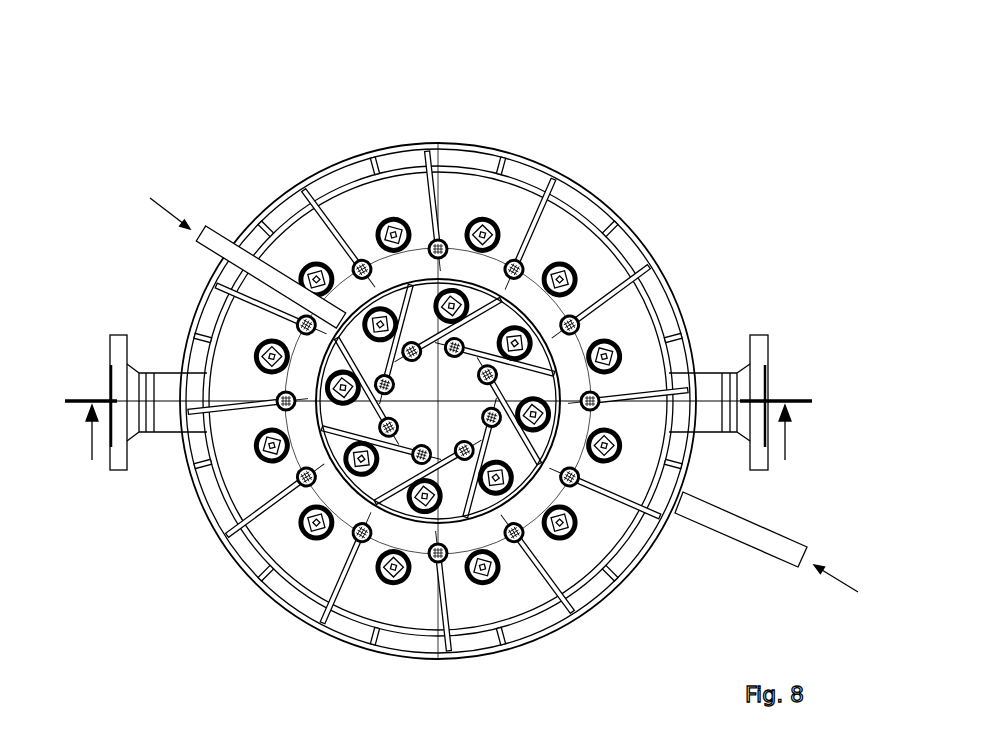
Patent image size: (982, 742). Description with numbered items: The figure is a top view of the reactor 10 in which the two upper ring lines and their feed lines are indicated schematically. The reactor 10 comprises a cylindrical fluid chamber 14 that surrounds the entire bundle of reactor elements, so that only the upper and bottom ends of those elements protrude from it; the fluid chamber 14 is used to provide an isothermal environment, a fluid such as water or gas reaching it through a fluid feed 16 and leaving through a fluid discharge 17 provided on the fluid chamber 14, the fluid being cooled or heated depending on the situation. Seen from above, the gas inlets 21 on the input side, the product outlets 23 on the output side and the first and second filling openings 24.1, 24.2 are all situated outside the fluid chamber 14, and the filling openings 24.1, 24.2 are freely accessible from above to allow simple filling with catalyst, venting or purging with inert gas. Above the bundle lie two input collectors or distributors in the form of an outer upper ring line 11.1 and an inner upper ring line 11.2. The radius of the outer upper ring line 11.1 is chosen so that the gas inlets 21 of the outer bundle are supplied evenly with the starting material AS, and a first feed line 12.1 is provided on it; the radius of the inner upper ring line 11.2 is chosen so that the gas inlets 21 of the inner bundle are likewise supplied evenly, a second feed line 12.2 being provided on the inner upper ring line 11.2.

The reactor 10 is at (100, 107).
The outer upper ring line 11.1 is at (393, 150).
The inner upper ring line 11.2 is at (552, 337).
The fluid chamber 14 is at (460, 165).
The gas inlet 21 is at (322, 182).
The product outlet 23 is at (607, 225).
The first filling opening 24.1 is at (297, 478).
The second filling opening 24.2 is at (300, 528).
The first feed line 12.1 is at (738, 540).
The second feed line 12.2 is at (212, 237).
The fluid feed 16 is at (758, 337).
The fluid discharge 17 is at (118, 335).